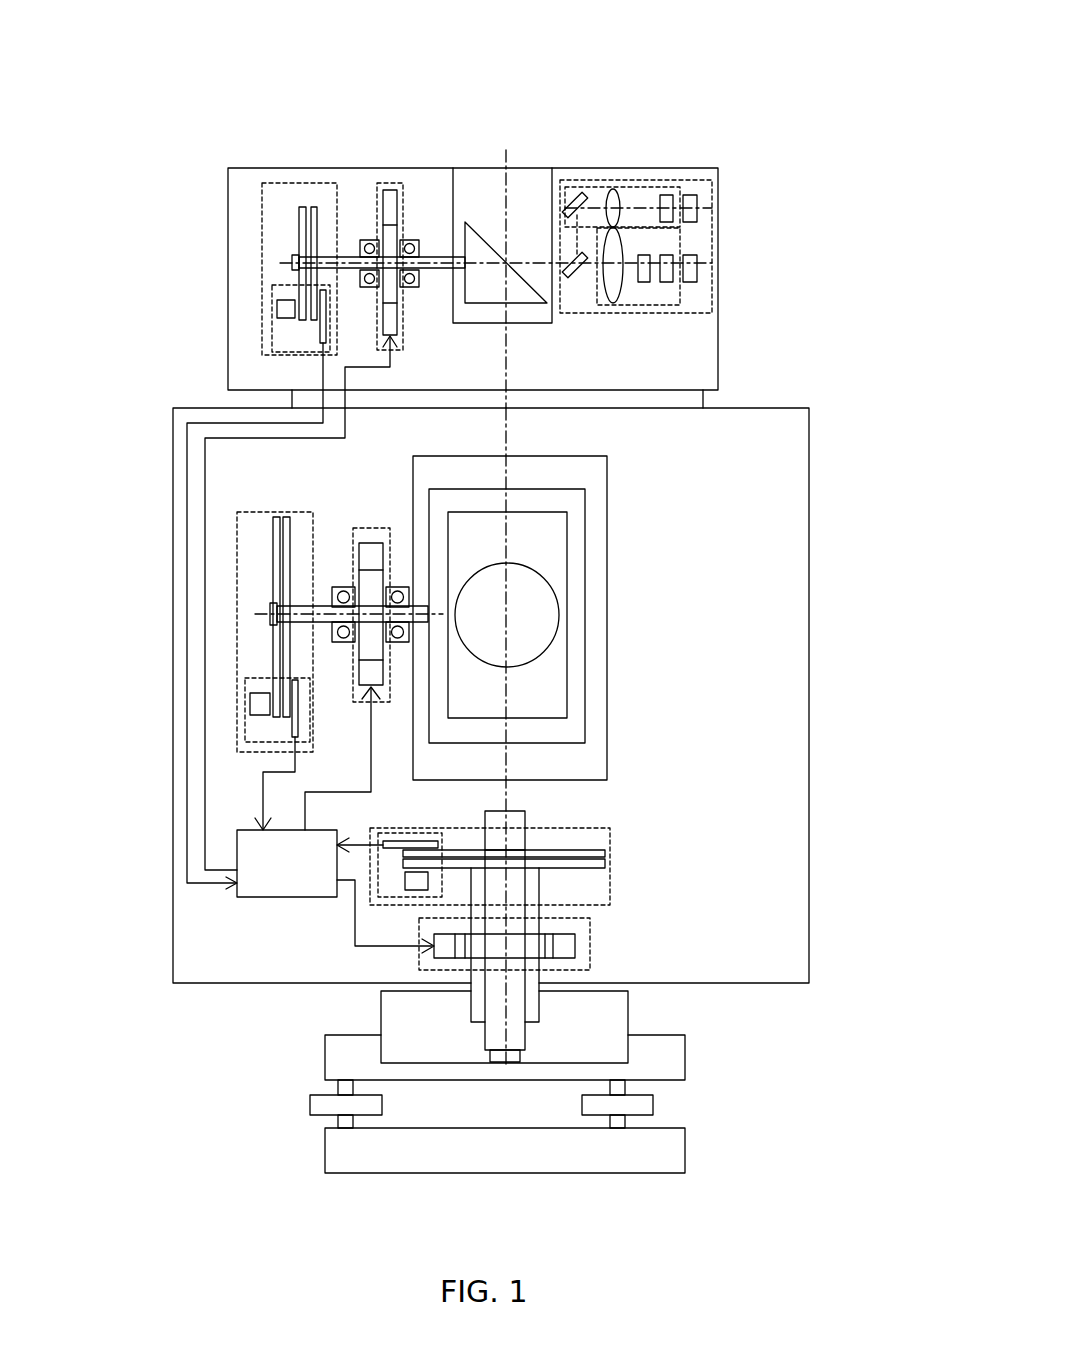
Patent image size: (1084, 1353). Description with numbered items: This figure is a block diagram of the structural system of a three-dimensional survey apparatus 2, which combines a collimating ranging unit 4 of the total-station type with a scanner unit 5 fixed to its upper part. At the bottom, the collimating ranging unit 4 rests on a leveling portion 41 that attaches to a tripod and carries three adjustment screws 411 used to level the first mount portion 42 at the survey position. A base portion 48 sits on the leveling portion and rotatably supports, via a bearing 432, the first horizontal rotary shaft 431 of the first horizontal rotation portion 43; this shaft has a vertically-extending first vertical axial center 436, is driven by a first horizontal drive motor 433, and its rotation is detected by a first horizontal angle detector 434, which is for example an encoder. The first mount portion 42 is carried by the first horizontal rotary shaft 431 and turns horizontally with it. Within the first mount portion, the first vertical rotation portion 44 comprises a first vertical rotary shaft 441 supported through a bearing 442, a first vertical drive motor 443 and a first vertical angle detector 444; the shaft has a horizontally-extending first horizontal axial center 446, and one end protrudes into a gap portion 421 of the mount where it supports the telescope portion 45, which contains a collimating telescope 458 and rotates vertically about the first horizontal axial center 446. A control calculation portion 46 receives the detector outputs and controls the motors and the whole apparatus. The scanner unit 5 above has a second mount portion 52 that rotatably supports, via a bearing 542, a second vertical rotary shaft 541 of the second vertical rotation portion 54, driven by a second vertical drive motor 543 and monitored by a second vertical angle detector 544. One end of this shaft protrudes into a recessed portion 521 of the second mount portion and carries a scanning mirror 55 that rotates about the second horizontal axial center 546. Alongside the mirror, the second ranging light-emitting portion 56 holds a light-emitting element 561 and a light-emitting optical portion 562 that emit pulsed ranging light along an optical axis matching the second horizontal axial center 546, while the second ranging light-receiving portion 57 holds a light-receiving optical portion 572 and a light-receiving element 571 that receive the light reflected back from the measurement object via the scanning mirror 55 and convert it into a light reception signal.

The three-dimensional survey apparatus 2 is at (665, 95).
The collimating ranging unit 4 is at (503, 736).
The leveling portion 41 is at (785, 1033).
The adjustment screws 411 is at (653, 1105).
The first mount portion 42 is at (811, 540).
The gap portion 421 is at (603, 522).
The first horizontal rotation portion 43 is at (684, 878).
The first horizontal rotary shaft 431 is at (527, 839).
The bearing 432 is at (540, 1007).
The first horizontal drive motor 433 is at (590, 949).
The first horizontal angle detector 434 is at (610, 847).
The first vertical axial center 436 is at (507, 793).
The first vertical rotation portion 44 is at (242, 761).
The first vertical rotary shaft 441 is at (427, 627).
The bearing 442 is at (334, 586).
The first vertical drive motor 443 is at (371, 528).
The first vertical angle detector 444 is at (250, 512).
The first horizontal axial center 446 is at (250, 617).
The telescope portion 45 is at (574, 502).
The collimating telescope 458 is at (558, 580).
The control calculation portion 46 is at (253, 899).
The base portion 48 is at (628, 1012).
The scanner unit 5 is at (508, 480).
The second mount portion 52 is at (228, 340).
The recessed portion 521 is at (487, 175).
The second vertical rotation portion 54 is at (265, 366).
The second vertical rotary shaft 541 is at (432, 270).
The bearing 542 is at (411, 240).
The second vertical drive motor 543 is at (387, 183).
The second vertical angle detector 544 is at (292, 183).
The second horizontal axial center 546 is at (294, 262).
The scanning mirror 55 is at (478, 235).
The second ranging light-emitting portion 56 is at (832, 113).
The light-emitting element 561 is at (697, 205).
The light-emitting optical portion 562 is at (660, 182).
The second ranging light-receiving portion 57 is at (832, 243).
The light-receiving element 571 is at (697, 257).
The light-receiving optical portion 572 is at (680, 293).